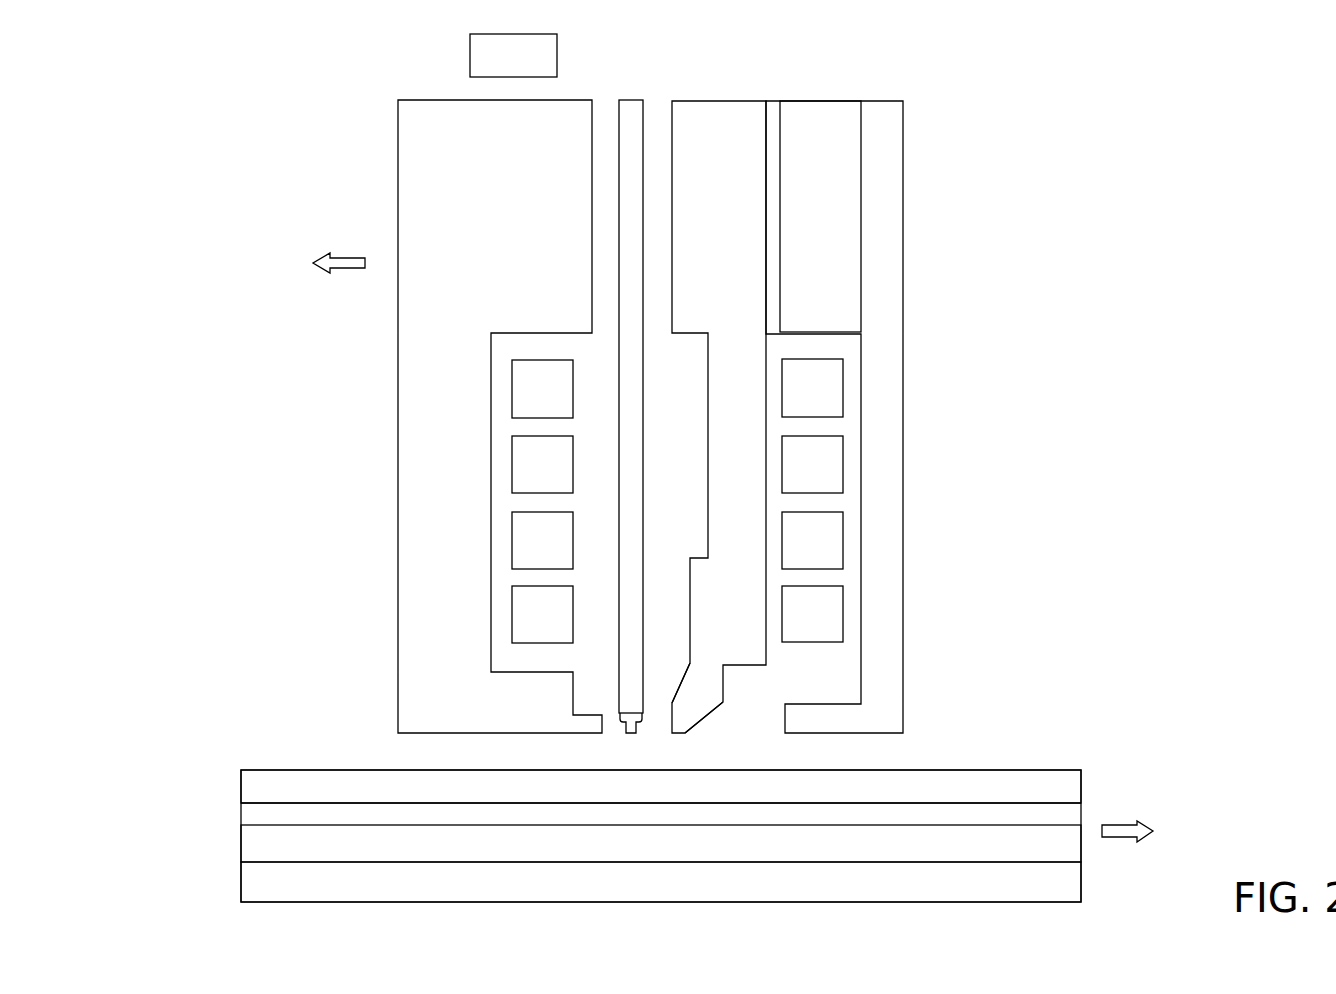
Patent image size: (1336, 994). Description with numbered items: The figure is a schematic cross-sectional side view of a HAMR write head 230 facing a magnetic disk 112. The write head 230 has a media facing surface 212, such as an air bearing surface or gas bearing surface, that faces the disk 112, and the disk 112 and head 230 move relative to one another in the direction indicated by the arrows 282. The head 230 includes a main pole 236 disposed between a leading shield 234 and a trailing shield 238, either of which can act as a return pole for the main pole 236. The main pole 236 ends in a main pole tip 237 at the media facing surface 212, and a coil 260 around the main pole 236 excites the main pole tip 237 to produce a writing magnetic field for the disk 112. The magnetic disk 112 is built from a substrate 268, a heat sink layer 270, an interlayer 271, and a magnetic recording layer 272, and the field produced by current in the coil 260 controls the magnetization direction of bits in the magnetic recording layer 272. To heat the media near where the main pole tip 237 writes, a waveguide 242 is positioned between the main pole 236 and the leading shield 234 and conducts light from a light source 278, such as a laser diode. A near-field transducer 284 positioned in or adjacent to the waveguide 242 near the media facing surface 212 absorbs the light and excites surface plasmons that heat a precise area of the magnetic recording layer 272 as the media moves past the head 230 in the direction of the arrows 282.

The magnetic disk 112 is at (1078, 716).
The media facing surface 212 is at (692, 738).
The HAMR write head 230 is at (230, 178).
The leading shield 234 is at (459, 496).
The main pole 236 is at (755, 490).
The main pole tip 237 is at (719, 702).
The trailing shield 238 is at (900, 490).
The waveguide 242 is at (629, 202).
The coil 260 is at (562, 402).
The substrate 268 is at (760, 891).
The heat sink layer 270 is at (845, 855).
The interlayer 271 is at (241, 815).
The magnetic recording layer 272 is at (885, 798).
The light source 278 is at (628, 94).
The arrows 282 is at (342, 256).
The near-field transducer 284 is at (623, 715).